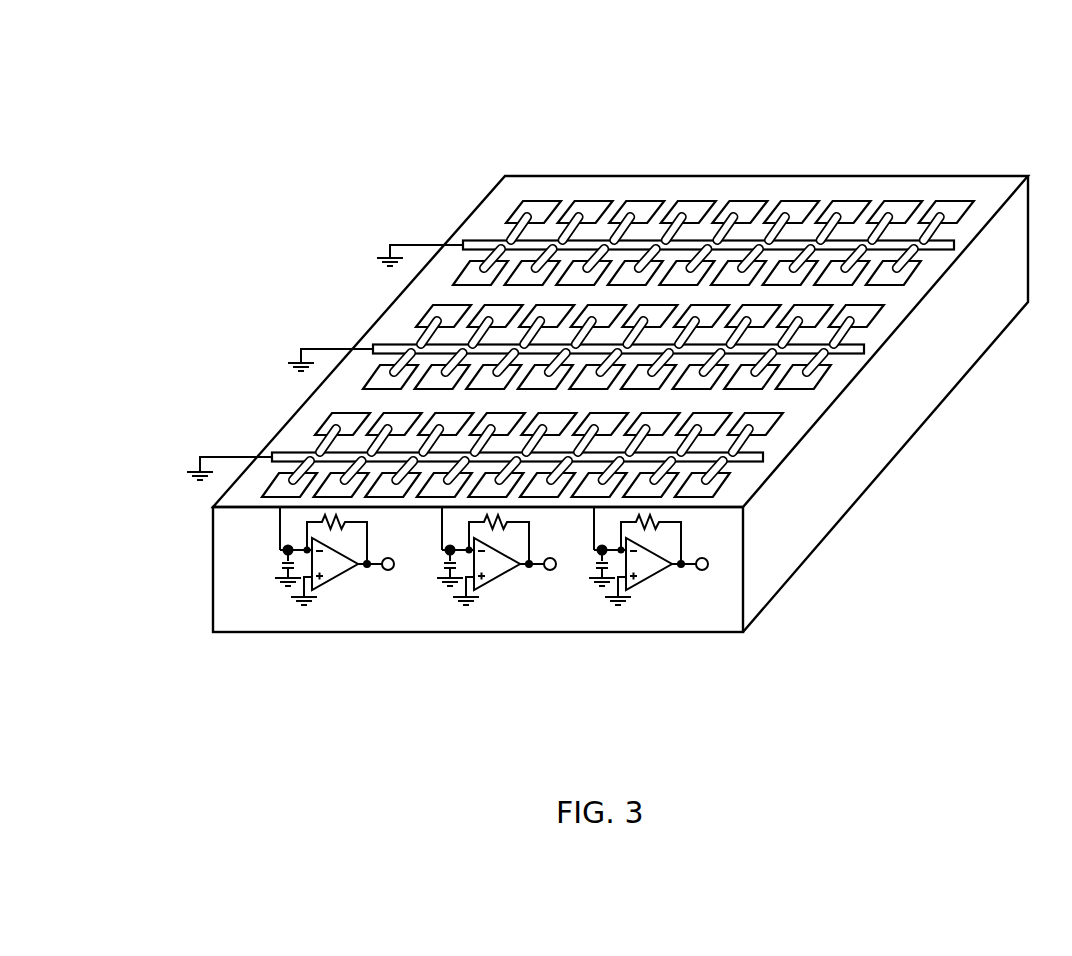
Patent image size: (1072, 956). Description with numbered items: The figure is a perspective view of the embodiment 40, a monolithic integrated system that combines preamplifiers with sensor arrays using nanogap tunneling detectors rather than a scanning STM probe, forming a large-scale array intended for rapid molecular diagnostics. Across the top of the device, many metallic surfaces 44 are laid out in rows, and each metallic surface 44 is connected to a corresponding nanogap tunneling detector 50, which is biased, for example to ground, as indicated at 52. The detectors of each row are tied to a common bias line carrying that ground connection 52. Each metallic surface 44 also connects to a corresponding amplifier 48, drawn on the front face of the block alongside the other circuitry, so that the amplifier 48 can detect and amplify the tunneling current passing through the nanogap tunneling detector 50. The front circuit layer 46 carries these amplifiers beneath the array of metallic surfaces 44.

The embodiment 40 is at (436, 72).
The metallic surface 44 is at (282, 489).
The substrate / circuit layer 46 is at (246, 543).
The amplifier 48 is at (397, 603).
The nanogap tunneling detector 50 is at (303, 461).
The bias 52 is at (225, 456).